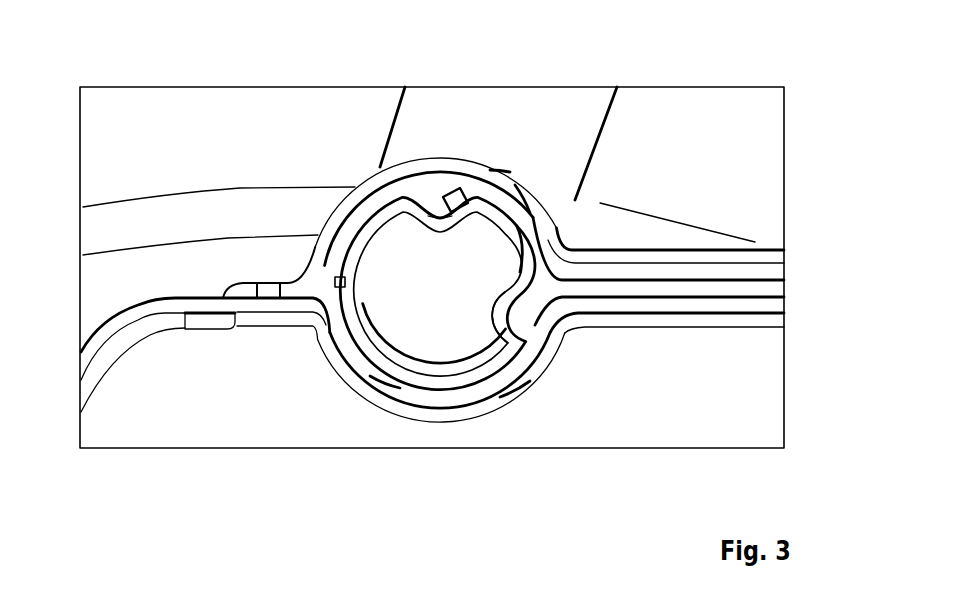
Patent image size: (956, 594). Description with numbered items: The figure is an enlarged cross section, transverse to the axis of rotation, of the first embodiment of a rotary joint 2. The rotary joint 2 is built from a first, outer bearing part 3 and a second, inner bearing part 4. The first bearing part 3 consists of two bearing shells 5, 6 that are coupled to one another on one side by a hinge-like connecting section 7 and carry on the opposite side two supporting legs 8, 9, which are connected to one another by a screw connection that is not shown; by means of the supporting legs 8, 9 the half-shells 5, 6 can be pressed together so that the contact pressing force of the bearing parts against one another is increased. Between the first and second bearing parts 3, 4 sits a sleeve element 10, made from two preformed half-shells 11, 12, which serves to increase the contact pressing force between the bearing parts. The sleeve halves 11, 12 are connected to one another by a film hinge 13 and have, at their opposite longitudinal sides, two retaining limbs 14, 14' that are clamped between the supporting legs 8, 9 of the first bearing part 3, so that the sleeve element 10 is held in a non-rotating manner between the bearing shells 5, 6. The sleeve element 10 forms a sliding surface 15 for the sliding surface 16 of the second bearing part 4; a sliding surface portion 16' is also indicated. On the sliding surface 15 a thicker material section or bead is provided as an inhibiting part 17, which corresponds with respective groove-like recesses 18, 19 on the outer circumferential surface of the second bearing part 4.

The rotary joint 2 is at (237, 170).
The first, outer bearing part 3 is at (287, 257).
The second, inner bearing part 4 is at (520, 270).
The bearing shell 5 is at (353, 193).
The bearing shell 6 is at (522, 373).
The hinge-like connecting section 7 is at (213, 285).
The supporting leg 8 is at (754, 258).
The supporting leg 9 is at (733, 307).
The sleeve element 10 is at (322, 306).
The sleeve half 11 is at (498, 195).
The sleeve half 12 is at (430, 383).
The film hinge 13 is at (338, 272).
The retaining limb 14 is at (696, 181).
The retaining limb 14' is at (658, 365).
The sliding surface 15 is at (512, 313).
The sliding surface 16 is at (348, 442).
The sleeve wall portion 16' is at (571, 120).
The inhibiting part 17 is at (451, 187).
The groove-like recess 18 is at (433, 203).
The groove-like recess 19 is at (513, 322).